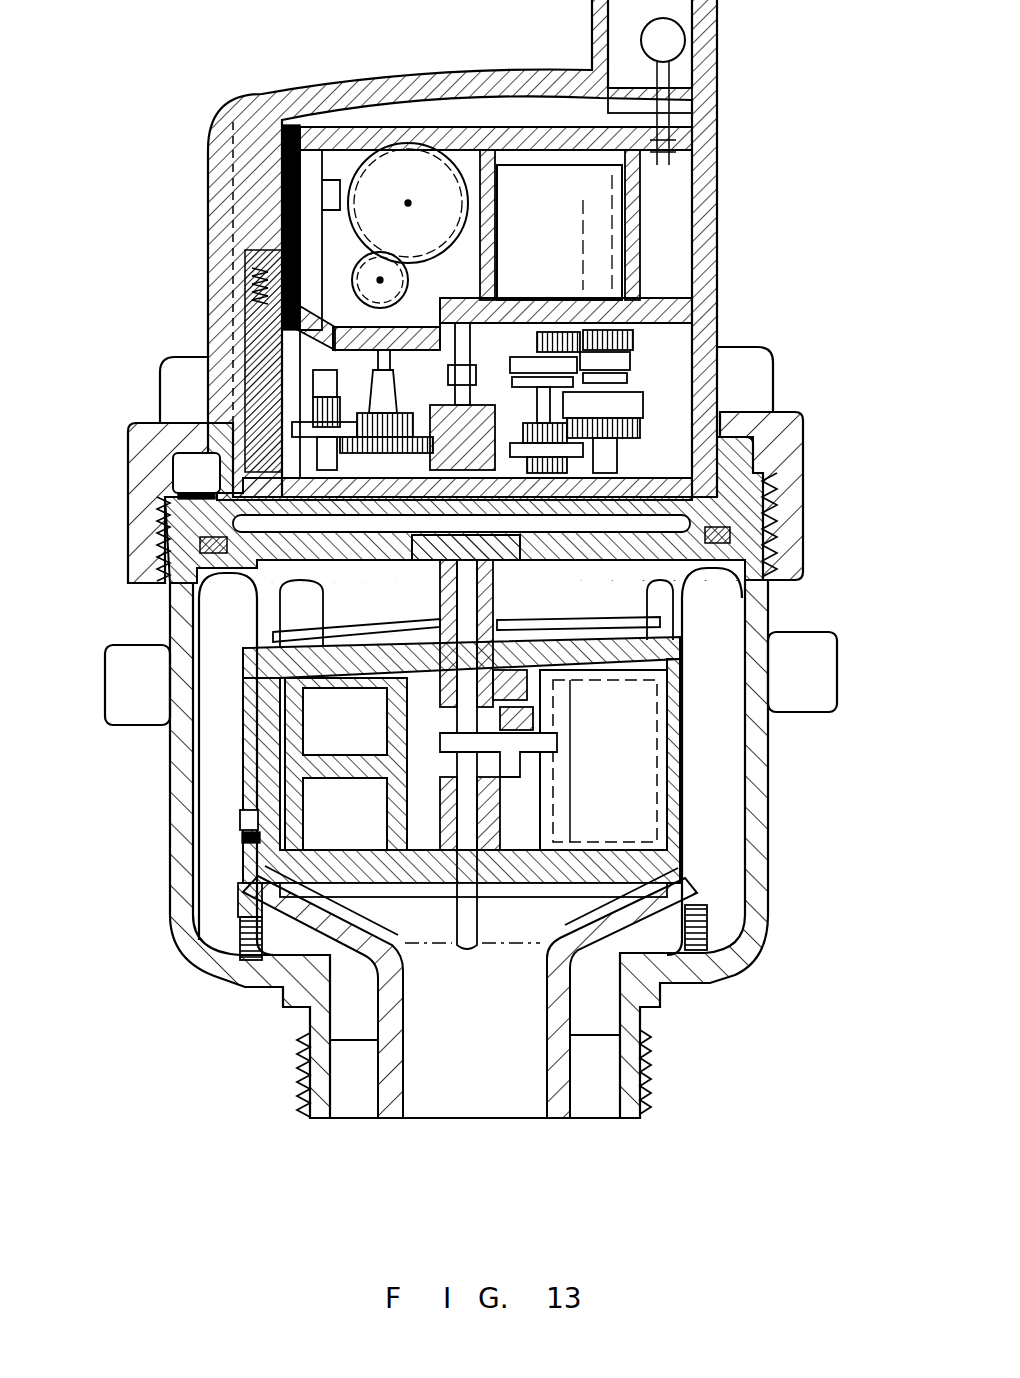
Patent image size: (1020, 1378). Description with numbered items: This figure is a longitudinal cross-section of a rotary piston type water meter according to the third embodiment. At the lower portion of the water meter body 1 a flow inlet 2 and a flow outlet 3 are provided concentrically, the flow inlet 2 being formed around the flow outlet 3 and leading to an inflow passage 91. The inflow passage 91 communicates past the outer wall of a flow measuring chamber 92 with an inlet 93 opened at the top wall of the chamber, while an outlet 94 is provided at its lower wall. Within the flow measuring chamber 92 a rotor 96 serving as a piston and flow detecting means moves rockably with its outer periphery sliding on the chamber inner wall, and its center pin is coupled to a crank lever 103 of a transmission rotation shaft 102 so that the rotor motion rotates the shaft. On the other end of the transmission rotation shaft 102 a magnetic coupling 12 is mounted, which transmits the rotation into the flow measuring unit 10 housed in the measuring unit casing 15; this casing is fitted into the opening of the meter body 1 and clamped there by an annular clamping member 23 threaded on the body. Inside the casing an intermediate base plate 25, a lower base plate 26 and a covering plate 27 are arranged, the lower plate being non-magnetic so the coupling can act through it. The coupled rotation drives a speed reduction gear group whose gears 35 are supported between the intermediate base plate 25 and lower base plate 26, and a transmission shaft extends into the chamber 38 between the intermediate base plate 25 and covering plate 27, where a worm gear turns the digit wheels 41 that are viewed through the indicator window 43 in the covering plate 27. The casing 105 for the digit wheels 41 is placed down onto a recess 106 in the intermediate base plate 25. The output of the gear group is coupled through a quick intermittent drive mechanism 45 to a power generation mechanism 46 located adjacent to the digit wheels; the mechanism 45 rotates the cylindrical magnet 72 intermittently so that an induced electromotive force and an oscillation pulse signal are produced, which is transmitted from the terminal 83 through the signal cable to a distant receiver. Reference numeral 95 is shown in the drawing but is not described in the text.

The water meter body 1 is at (760, 830).
The flow inlet 2 is at (588, 1097).
The flow outlet 3 is at (455, 1092).
The flow measuring unit 10 is at (297, 405).
The magnetic coupling 12 is at (530, 560).
The measuring unit casing 15 is at (216, 100).
The annular clamping member 23 is at (790, 498).
The intermediate base plate 25 is at (212, 310).
The lower base plate 26 is at (196, 476).
The covering plate 27 is at (536, 112).
The gear 35 is at (298, 386).
The chamber for flow indication mechanism 38 is at (304, 124).
The digit wheels 41 is at (466, 125).
The indicator window 43 is at (407, 133).
The quick intermittent drive mechanism 45 is at (658, 382).
The power generation mechanism 46 is at (660, 228).
The cylindrical magnet 72 is at (578, 250).
The terminal 83 is at (682, 34).
The inflow passage 91 is at (217, 787).
The flow measuring chamber 92 is at (607, 640).
The inlet 93 is at (356, 688).
The outlet 94 is at (320, 850).
The funnel pipe 95 is at (520, 970).
The rotor 96 is at (262, 727).
The transmission rotation shaft 102 is at (437, 627).
The crank lever 103 is at (520, 723).
The casing for digit wheels 105 is at (280, 203).
The recess 106 is at (262, 297).